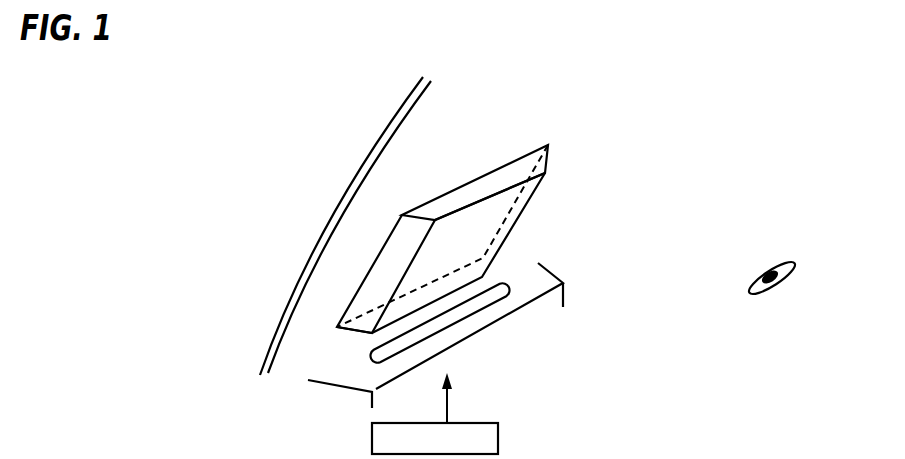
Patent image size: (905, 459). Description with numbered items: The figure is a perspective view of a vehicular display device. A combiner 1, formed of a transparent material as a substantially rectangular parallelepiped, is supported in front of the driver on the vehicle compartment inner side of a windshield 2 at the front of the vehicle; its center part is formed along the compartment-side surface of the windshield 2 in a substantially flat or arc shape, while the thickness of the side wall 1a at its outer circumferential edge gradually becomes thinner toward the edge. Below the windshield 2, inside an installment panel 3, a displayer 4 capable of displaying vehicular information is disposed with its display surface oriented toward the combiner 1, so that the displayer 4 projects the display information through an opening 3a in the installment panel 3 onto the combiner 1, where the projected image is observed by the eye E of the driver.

The combiner 1 is at (530, 150).
The side wall 1a is at (537, 191).
The windshield 2 is at (392, 117).
The installment panel 3 is at (497, 315).
The opening 3a is at (512, 298).
The displayer 4 is at (498, 427).
The eye of driver E is at (777, 265).